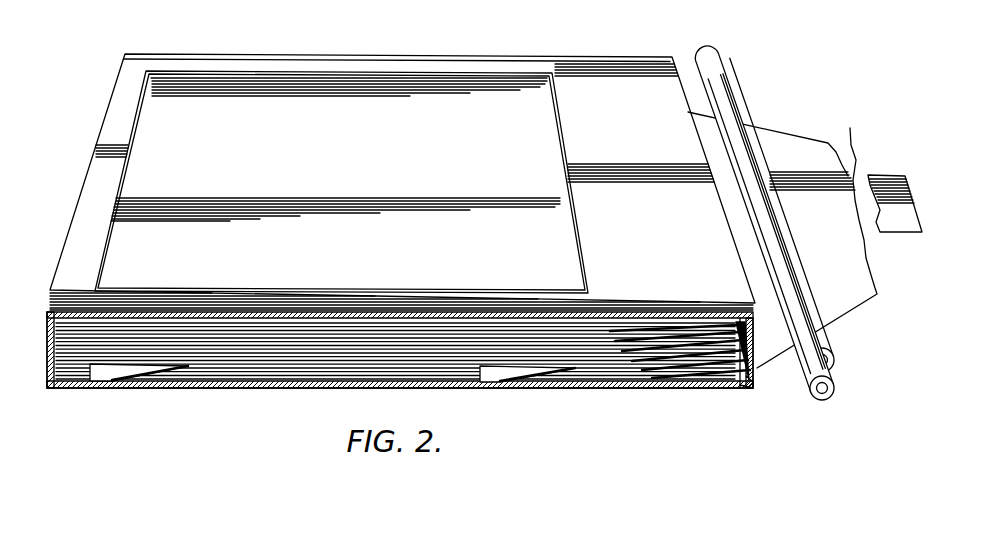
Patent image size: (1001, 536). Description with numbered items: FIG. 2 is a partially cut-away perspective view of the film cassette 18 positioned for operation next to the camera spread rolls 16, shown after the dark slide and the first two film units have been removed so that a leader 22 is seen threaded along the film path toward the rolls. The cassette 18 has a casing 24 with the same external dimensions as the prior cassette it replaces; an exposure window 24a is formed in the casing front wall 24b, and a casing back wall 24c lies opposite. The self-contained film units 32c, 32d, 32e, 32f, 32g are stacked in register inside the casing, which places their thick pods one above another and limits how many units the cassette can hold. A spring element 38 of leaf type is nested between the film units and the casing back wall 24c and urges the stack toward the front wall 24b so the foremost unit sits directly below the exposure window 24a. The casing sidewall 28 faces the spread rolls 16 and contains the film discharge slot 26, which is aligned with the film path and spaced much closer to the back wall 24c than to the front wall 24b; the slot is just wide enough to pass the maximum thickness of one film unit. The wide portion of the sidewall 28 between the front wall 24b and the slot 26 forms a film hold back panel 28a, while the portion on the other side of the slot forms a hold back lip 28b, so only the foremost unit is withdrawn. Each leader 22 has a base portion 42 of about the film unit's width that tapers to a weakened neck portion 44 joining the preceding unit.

The film cassette 18 is at (451, 214).
The casing 24 is at (613, 68).
The exposure window 24a is at (362, 92).
The casing front wall 24b is at (600, 140).
The casing back wall 24c is at (298, 378).
The base portion 42 is at (789, 143).
The leader 22 is at (830, 172).
The neck portion 44 is at (893, 178).
The film unit 32c is at (705, 335).
The film unit 32d is at (692, 342).
The film unit 32e is at (678, 348).
The film unit 32f is at (672, 362).
The film unit 32g is at (655, 367).
The casing sidewall 28 is at (758, 335).
The film hold back panel 28a is at (736, 322).
The hold back lip 28b is at (740, 392).
The film discharge slot 26 is at (757, 378).
The feed rollers 16 is at (834, 391).
The spring element 38 is at (112, 380).